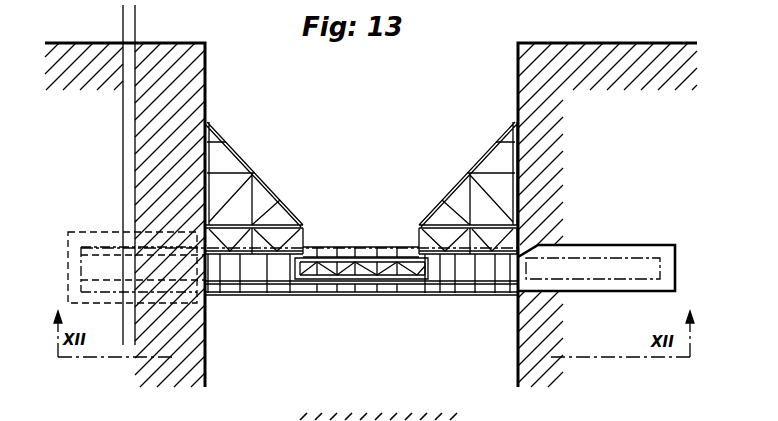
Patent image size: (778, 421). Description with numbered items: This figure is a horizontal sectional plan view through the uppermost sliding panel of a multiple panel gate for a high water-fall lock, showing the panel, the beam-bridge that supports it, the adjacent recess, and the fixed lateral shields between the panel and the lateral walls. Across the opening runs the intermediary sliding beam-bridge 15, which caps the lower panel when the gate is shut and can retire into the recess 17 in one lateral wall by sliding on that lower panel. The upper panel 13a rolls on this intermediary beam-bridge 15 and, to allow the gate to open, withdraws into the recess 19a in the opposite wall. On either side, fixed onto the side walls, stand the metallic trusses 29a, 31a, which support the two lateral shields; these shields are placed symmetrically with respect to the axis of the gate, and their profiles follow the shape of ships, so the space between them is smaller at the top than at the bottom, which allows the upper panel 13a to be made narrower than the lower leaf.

The recess 17 is at (98, 262).
The metallic truss 29a is at (242, 198).
The metallic truss 31a is at (463, 197).
The upper panel 13a is at (361, 266).
The intermediary sliding beam-bridge 15 is at (452, 268).
The recess 19a is at (608, 265).